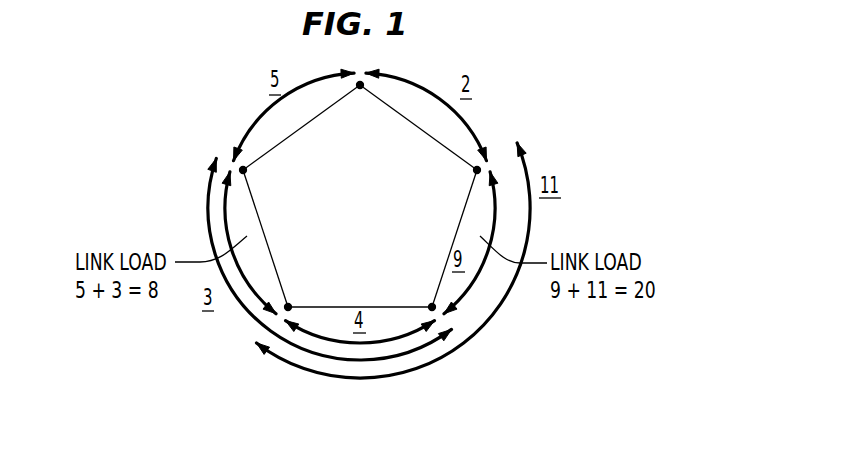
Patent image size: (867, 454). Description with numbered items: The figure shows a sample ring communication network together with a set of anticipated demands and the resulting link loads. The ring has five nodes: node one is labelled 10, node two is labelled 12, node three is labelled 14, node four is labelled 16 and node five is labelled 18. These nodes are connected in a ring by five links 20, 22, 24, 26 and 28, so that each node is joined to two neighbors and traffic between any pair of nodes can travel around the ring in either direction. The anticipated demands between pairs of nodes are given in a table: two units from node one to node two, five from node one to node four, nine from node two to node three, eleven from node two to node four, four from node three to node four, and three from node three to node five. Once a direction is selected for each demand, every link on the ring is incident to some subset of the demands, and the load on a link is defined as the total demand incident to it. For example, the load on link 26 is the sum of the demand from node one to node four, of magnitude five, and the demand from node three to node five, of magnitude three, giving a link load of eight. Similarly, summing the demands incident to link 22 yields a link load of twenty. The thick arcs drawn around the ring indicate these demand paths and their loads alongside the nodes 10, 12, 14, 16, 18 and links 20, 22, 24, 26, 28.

The node 1 10 is at (366, 72).
The node 2 12 is at (483, 164).
The node 3 14 is at (437, 315).
The node 4 16 is at (280, 311).
The node 5 18 is at (238, 160).
The link 20 is at (421, 128).
The link 22 is at (447, 257).
The link 24 is at (357, 305).
The link 26 is at (276, 263).
The link 28 is at (293, 137).